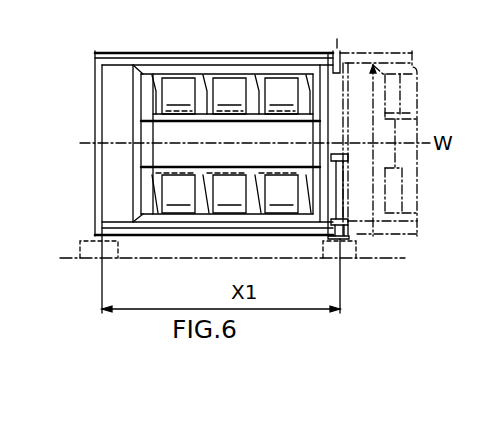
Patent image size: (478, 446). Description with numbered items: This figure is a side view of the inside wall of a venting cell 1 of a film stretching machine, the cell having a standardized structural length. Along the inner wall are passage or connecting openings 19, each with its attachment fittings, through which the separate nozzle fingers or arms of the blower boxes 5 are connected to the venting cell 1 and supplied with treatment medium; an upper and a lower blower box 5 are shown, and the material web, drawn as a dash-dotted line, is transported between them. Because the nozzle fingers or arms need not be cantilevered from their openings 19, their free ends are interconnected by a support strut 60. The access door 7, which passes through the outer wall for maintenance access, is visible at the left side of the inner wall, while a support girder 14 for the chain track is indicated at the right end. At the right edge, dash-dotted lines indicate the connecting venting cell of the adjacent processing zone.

The venting cell 1 is at (263, 46).
The blower boxes 5 is at (227, 145).
The access door 7 is at (110, 141).
The support girder 14 is at (352, 222).
The openings 19 is at (154, 89).
The support strut 60 is at (218, 159).